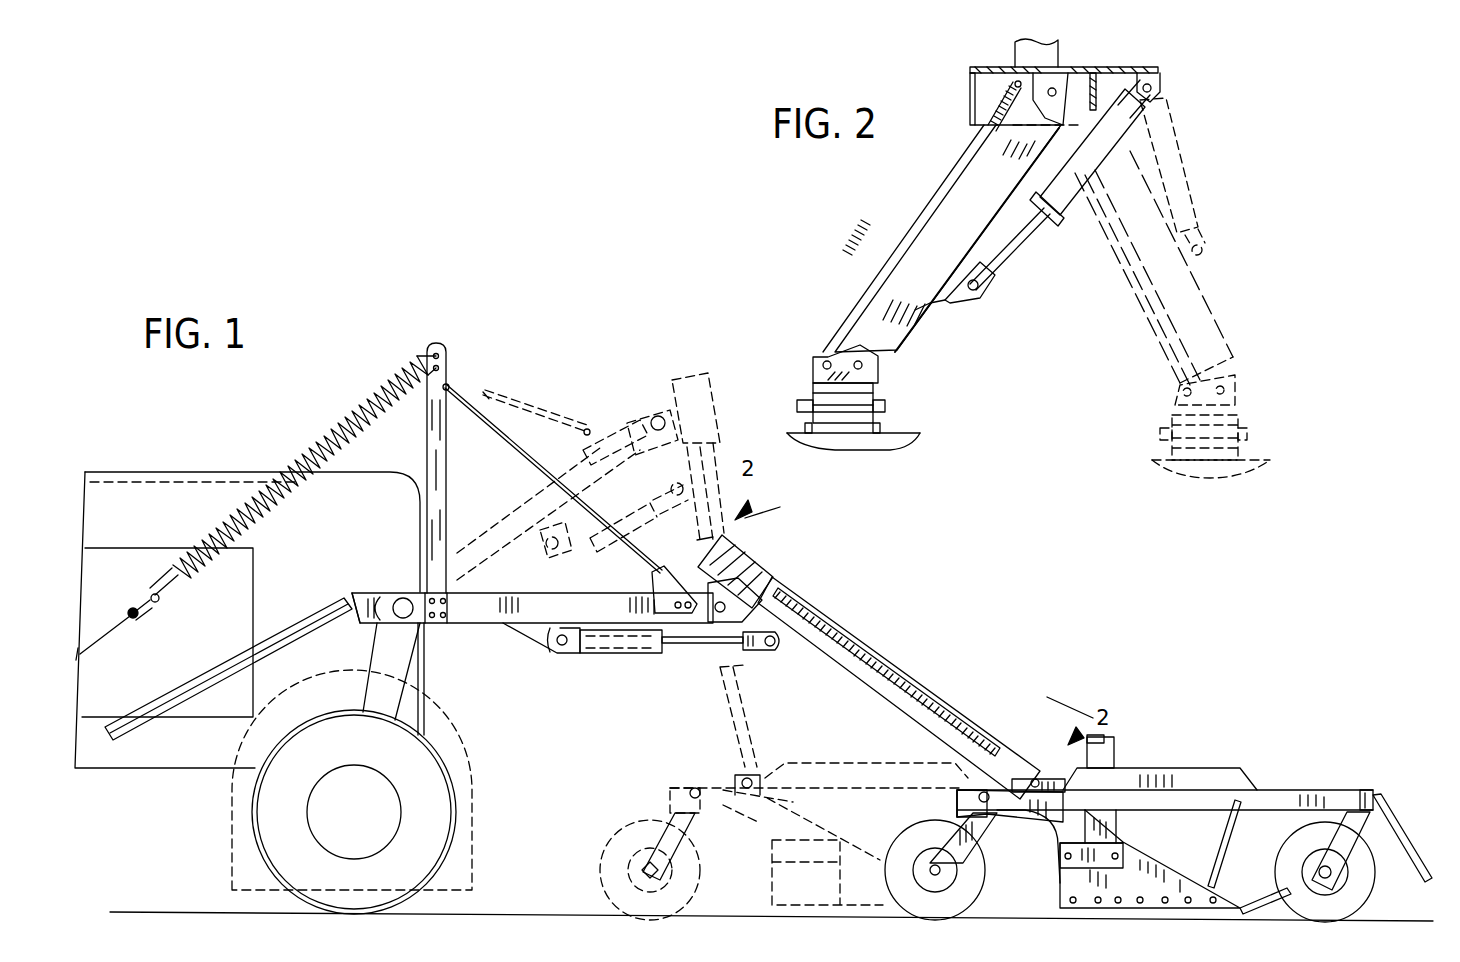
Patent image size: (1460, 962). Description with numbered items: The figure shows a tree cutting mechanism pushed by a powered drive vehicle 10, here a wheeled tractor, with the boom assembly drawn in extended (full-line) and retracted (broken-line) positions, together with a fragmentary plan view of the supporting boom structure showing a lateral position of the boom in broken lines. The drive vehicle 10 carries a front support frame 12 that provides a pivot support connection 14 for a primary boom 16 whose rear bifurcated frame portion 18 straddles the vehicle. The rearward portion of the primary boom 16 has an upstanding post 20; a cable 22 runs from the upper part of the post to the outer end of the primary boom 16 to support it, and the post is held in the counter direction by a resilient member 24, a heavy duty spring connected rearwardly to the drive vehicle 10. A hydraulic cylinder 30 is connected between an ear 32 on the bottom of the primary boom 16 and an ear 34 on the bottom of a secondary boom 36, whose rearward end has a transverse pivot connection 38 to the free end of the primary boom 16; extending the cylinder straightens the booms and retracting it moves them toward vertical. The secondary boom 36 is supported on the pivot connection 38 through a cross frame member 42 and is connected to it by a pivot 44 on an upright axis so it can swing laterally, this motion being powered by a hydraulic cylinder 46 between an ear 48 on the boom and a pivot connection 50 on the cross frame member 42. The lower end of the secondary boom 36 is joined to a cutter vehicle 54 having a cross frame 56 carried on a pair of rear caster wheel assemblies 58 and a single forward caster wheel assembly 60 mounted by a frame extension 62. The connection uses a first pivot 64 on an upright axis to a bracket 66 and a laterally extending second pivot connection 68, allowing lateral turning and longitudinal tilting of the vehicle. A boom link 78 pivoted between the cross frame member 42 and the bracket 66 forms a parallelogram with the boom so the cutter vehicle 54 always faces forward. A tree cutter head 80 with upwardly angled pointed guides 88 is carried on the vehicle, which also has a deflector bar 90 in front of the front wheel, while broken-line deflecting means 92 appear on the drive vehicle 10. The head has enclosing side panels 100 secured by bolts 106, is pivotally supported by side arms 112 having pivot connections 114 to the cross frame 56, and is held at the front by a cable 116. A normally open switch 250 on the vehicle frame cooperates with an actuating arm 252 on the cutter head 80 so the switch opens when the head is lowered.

In FIG. 1, the drive vehicle 10 is at (210, 472).
In FIG. 1, the front support frame 12 is at (368, 660).
In FIG. 1, the pivot support connection 14 is at (403, 598).
In FIG. 1, the primary boom 16 is at (520, 507).
In FIG. 2, the primary boom 16 is at (1010, 50).
In FIG. 1, the rear bifurcated frame portion 18 is at (456, 627).
In FIG. 1, the upstanding post 20 is at (427, 445).
In FIG. 1, the cable 22 is at (518, 468).
In FIG. 1, the resilient member 24 is at (348, 412).
In FIG. 1, the hydraulic cylinder 30 is at (630, 532).
In FIG. 1, the ear 32 is at (530, 565).
In FIG. 1, the ear 34 is at (790, 652).
In FIG. 1, the secondary boom 36 is at (905, 662).
In FIG. 2, the secondary boom 36 is at (897, 255).
In FIG. 1, the transverse pivot connection 38 is at (700, 622).
In FIG. 1, the cross frame member 42 is at (755, 560).
In FIG. 2, the cross frame member 42 is at (970, 90).
In FIG. 2, the pivot 44 is at (1062, 78).
In FIG. 2, the hydraulic cylinder 46 is at (1113, 160).
In FIG. 2, the ear 48 is at (965, 303).
In FIG. 2, the pivot connection 50 is at (1160, 88).
In FIG. 1, the cutter vehicle 54 is at (862, 760).
In FIG. 2, the cutter vehicle 54 is at (912, 438).
In FIG. 1, the cross frame 56 is at (995, 815).
In FIG. 1, the rear caster wheel assemblies 58 is at (618, 818).
In FIG. 1, the forward caster wheel assembly 60 is at (1278, 848).
In FIG. 1, the frame extension 62 is at (1315, 790).
In FIG. 2, the first pivot 64 is at (870, 365).
In FIG. 1, the bracket 66 is at (1033, 778).
In FIG. 2, the bracket 66 is at (810, 375).
In FIG. 1, the second pivot connection 68 is at (1040, 779).
In FIG. 2, the second pivot connection 68 is at (888, 408).
In FIG. 1, the boom link 78 is at (945, 700).
In FIG. 2, the boom link 78 is at (945, 185).
In FIG. 1, the tree cutter head 80 is at (1190, 860).
In FIG. 1, the angled pointed guides 88 is at (1262, 897).
In FIG. 1, the deflector bar 90 is at (1405, 840).
In FIG. 1, the deflecting means 92 is at (480, 838).
In FIG. 1, the side panels 100 is at (1058, 880).
In FIG. 1, the bolts 106 is at (1165, 897).
In FIG. 1, the side arms 112 is at (1120, 843).
In FIG. 1, the pivot connections 114 is at (962, 790).
In FIG. 1, the cable 116 is at (1225, 812).
In FIG. 1, the switch 250 is at (1115, 745).
In FIG. 1, the actuating arm 252 is at (1115, 818).